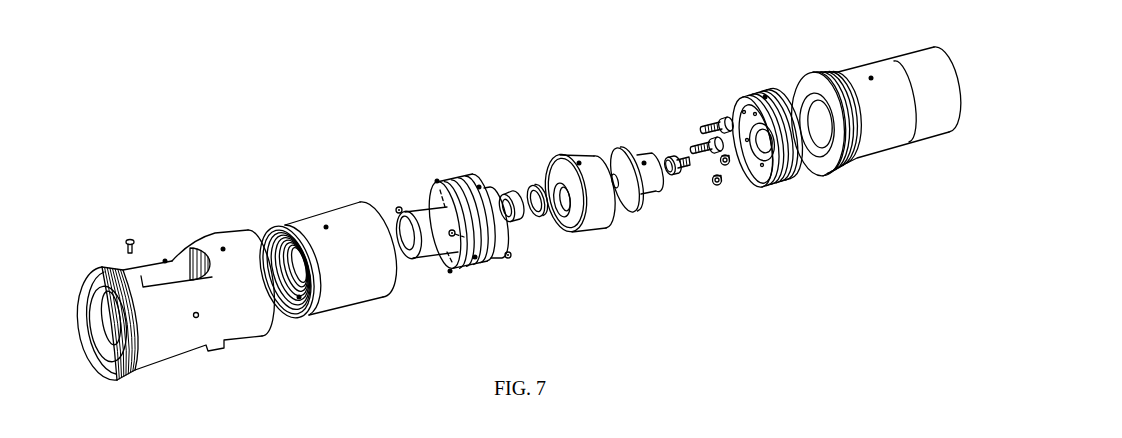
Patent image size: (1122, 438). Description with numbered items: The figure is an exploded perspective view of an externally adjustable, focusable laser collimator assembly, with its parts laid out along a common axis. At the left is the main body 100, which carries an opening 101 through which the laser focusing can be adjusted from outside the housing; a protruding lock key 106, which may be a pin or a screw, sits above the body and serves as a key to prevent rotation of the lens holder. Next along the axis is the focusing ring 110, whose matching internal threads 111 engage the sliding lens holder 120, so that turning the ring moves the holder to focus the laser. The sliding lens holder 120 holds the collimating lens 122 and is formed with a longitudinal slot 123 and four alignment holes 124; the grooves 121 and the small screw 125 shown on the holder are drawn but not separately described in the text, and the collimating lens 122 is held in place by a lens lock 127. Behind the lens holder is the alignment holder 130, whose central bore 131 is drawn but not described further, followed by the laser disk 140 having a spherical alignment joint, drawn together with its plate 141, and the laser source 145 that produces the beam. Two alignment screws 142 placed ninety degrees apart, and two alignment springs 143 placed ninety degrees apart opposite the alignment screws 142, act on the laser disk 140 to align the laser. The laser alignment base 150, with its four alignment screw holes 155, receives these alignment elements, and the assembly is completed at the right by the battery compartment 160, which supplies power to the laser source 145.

The main body 100 is at (175, 279).
The opening 101 is at (165, 257).
The lock key 106 is at (130, 237).
The focusing ring 110 is at (324, 258).
The internal threads 111 is at (299, 301).
The sliding lens holder 120 is at (467, 211).
The grooves 121 is at (474, 260).
The collimating lens 122 is at (513, 193).
The longitudinal slot 123 is at (422, 210).
The alignment holes 124 is at (450, 237).
The screw 125 is at (400, 206).
The lens lock 127 is at (533, 185).
The alignment holder 130 is at (577, 185).
The bore 131 is at (567, 212).
The laser disk 140 is at (644, 160).
The plate 141 is at (628, 195).
The alignment screws 142 is at (716, 117).
The alignment springs 143 is at (716, 186).
The laser source 145 is at (673, 156).
The laser alignment base 150 is at (763, 132).
The alignment screw holes 155 is at (761, 168).
The battery compartment 160 is at (871, 74).